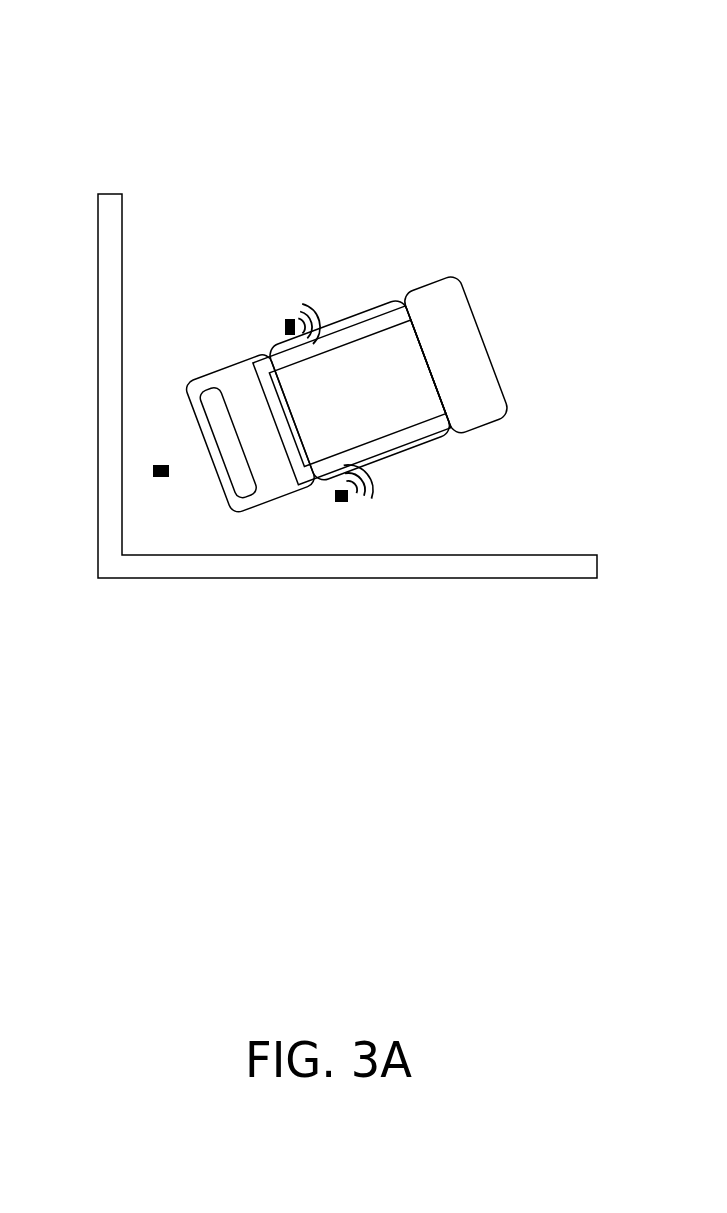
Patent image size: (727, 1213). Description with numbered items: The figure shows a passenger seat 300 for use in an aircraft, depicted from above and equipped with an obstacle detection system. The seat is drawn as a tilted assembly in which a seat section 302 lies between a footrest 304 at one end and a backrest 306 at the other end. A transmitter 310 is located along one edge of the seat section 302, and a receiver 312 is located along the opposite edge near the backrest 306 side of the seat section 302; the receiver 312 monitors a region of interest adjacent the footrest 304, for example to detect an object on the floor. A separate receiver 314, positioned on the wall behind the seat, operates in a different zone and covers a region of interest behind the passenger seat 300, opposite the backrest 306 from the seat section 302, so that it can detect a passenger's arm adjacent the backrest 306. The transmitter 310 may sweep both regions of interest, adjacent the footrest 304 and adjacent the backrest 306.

The passenger seat 300 is at (108, 126).
The seat section 302 is at (369, 309).
The footrest 304 is at (485, 375).
The backrest 306 is at (236, 357).
The transmitter 310 is at (345, 503).
The receiver 312 is at (287, 317).
The receiver 314 is at (152, 470).